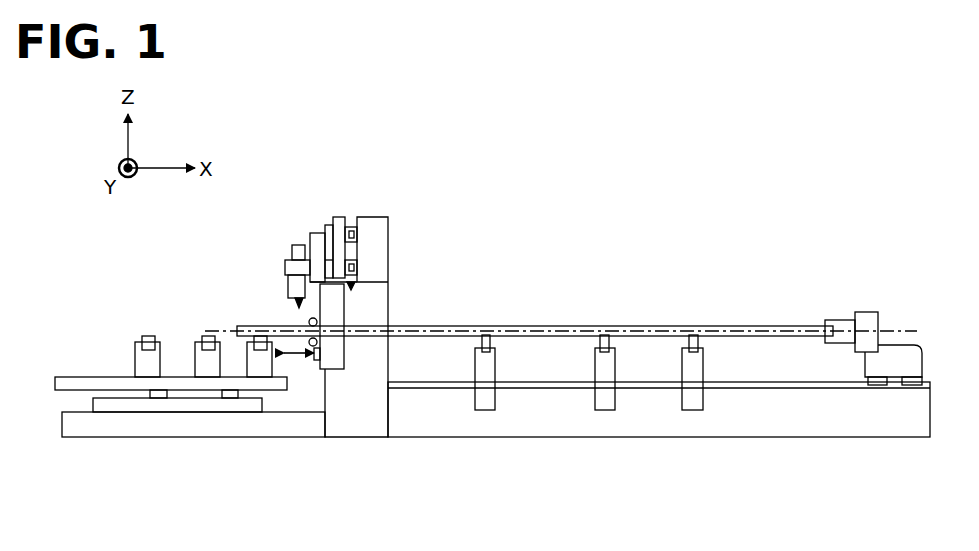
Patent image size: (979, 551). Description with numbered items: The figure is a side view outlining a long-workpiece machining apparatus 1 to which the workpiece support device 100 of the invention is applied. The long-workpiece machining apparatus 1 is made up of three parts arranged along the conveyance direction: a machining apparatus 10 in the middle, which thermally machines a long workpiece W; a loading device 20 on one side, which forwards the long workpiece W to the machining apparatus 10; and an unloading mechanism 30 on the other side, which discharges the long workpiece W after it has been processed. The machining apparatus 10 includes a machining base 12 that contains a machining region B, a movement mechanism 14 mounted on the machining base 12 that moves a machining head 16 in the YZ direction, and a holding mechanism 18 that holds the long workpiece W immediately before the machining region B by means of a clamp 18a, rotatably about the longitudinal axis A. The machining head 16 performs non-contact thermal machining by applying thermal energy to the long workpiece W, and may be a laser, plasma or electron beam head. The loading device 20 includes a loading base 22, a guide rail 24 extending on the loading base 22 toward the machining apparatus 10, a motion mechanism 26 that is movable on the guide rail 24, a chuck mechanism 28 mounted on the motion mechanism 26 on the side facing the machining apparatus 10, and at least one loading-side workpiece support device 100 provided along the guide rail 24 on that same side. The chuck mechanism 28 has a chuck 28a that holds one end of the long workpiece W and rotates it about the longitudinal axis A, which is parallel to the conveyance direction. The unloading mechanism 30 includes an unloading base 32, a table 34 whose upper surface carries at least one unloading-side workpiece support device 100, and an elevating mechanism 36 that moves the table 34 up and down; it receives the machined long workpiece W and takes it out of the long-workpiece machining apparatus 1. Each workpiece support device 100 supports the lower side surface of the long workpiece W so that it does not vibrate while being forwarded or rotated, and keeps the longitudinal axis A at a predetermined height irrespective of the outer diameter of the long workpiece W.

The long-workpiece machining apparatus 1 is at (742, 158).
The machining apparatus 10 is at (395, 462).
The machining base 12 is at (371, 422).
The movement mechanism 14 is at (338, 217).
The machining head 16 is at (298, 245).
The holding mechanism 18 is at (340, 316).
The clamp 18a is at (309, 322).
The loading device 20 is at (928, 462).
The loading base 22 is at (883, 431).
The guide rail 24 is at (648, 383).
The motion mechanism 26 is at (866, 363).
The chuck mechanism 28 is at (862, 312).
The chuck 28a is at (840, 320).
The unloading mechanism 30 is at (310, 462).
The unloading base 32 is at (90, 428).
The table 34 is at (70, 383).
The elevating mechanism 36 is at (118, 403).
The workpiece support device 100 is at (136, 328).
The long workpiece W is at (498, 325).
The machining region B is at (313, 360).
The longitudinal axis A is at (898, 332).